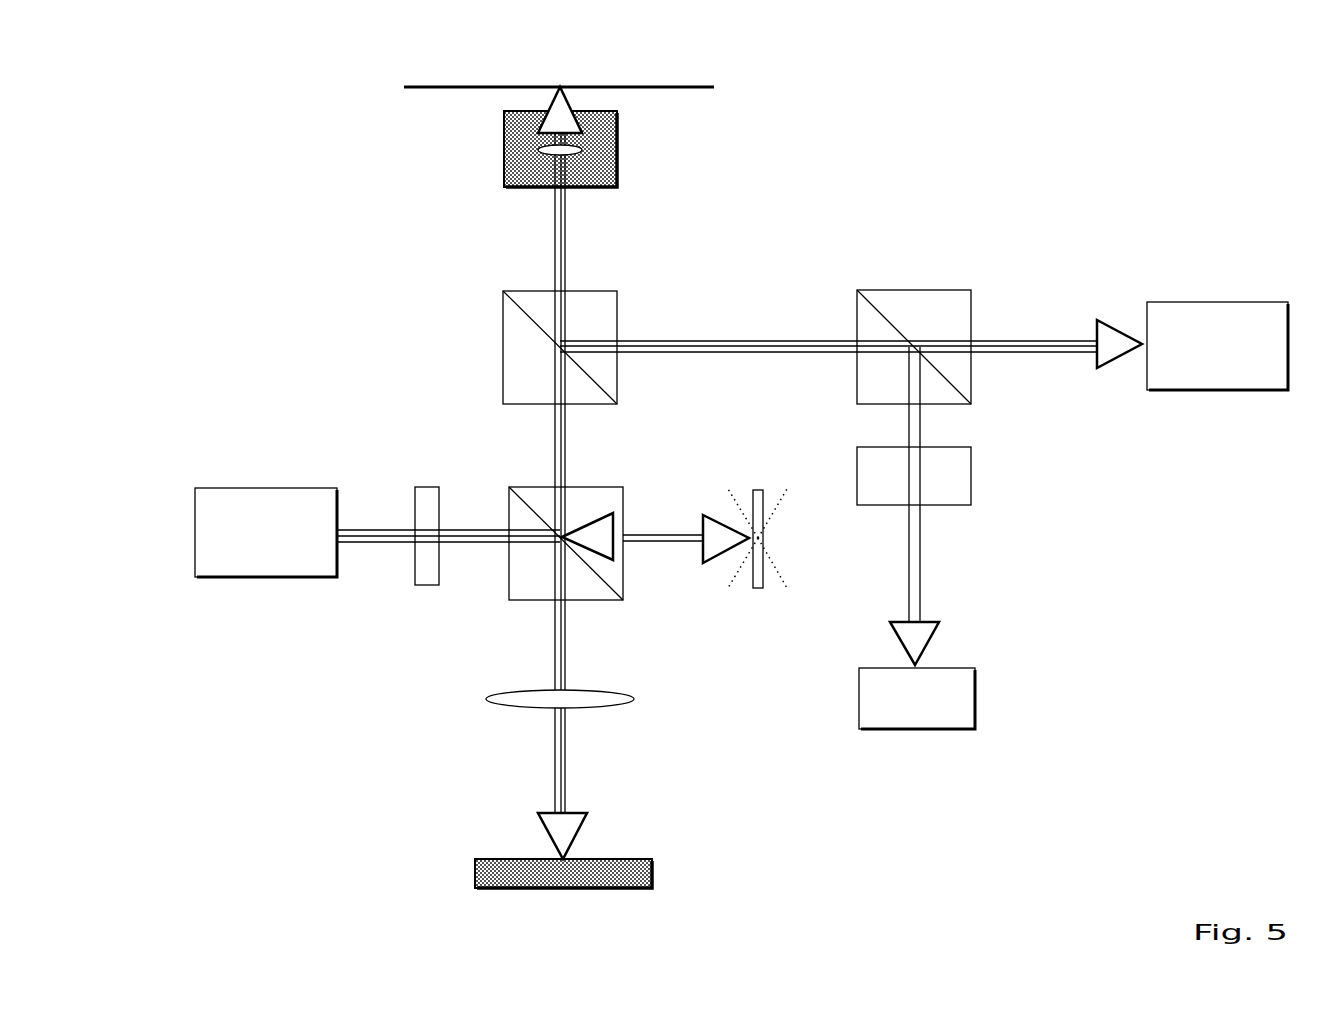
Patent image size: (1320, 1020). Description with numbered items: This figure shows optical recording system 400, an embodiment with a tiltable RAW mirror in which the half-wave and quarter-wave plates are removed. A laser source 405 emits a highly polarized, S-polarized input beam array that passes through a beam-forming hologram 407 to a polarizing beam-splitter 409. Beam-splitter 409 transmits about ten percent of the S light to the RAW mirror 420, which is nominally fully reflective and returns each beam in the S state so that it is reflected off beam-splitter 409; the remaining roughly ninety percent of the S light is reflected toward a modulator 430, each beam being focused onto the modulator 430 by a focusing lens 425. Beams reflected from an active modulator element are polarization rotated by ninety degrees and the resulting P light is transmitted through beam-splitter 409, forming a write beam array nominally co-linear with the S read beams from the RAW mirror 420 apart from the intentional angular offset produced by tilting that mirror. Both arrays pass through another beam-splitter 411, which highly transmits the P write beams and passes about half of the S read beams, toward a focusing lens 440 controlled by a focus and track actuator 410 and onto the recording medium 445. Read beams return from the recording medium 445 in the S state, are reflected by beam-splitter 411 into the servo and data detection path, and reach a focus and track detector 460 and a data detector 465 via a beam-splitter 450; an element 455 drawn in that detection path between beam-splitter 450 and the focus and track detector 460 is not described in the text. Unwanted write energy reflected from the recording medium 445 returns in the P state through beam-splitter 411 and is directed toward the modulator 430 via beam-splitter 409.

The optical recording system 400 is at (1095, 77).
The laser source 405 is at (247, 544).
The beam-forming hologram 407 is at (428, 586).
The polarizing beam-splitter 409 is at (521, 488).
The focus and track actuator 410 is at (504, 157).
The beam-splitter 411 is at (617, 322).
The RAW mirror 420 is at (757, 490).
The focusing lens 425 is at (634, 699).
The modulator 430 is at (475, 869).
The focusing lens 440 is at (582, 149).
The recording medium 445 is at (463, 86).
The beam-splitter 450 is at (972, 318).
The filter 455 is at (973, 480).
The focus and track detector 460 is at (898, 710).
The data detector 465 is at (1199, 358).